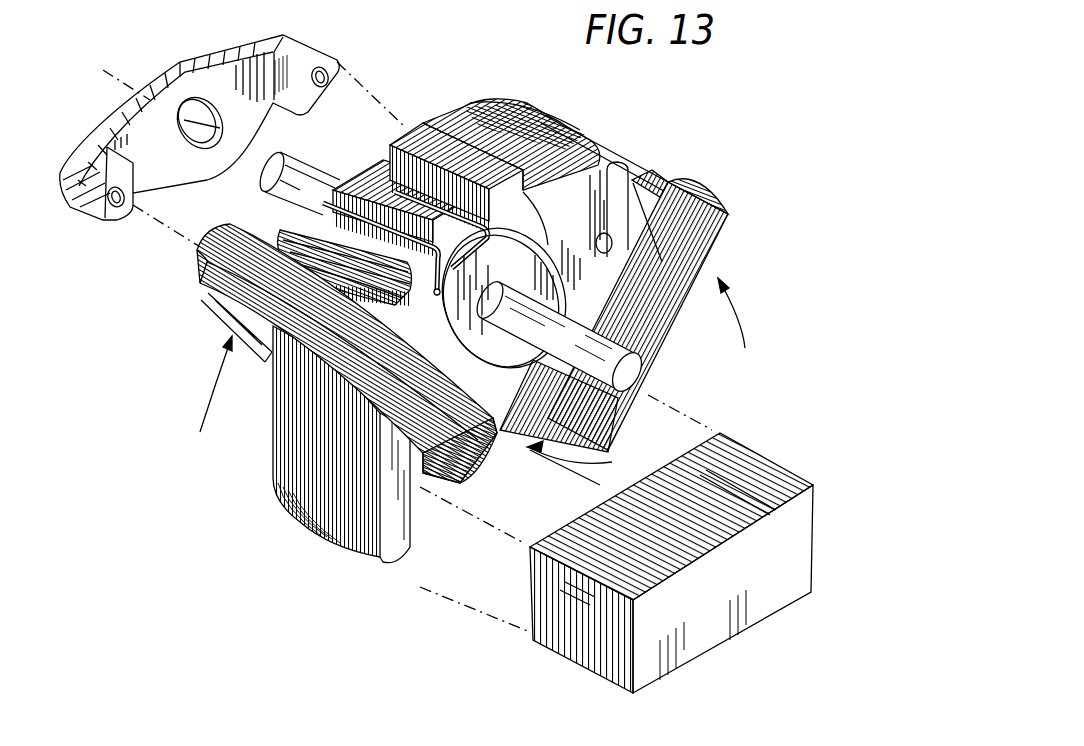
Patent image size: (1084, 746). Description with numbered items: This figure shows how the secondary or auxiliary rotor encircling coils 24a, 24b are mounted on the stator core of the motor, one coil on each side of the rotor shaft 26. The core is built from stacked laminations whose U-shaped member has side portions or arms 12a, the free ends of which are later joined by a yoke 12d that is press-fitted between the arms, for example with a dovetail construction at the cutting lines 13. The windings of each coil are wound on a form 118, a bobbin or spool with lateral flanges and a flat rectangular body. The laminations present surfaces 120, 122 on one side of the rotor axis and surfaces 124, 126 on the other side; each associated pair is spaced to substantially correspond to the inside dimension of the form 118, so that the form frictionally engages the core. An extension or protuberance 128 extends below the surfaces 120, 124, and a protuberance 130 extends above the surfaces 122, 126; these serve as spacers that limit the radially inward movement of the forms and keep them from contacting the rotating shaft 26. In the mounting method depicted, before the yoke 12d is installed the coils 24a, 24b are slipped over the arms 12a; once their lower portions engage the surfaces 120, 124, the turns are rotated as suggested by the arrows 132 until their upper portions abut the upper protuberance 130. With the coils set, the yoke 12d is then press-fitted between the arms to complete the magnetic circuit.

The side portion or arm 12a is at (420, 177).
The yoke 12d is at (697, 652).
The cutting lines 13 is at (420, 550).
The auxiliary rotor encircling coil 24a is at (703, 206).
The auxiliary rotor encircling coil 24b is at (207, 264).
The shaft 26 is at (284, 160).
The form 118 is at (203, 299).
The surface 120 is at (589, 463).
The surface 122 is at (506, 119).
The surface 124 is at (483, 505).
The surface 126 is at (343, 186).
The extension or protuberance 128 is at (512, 466).
The protuberance 130 is at (408, 135).
The arrows 132 is at (210, 403).